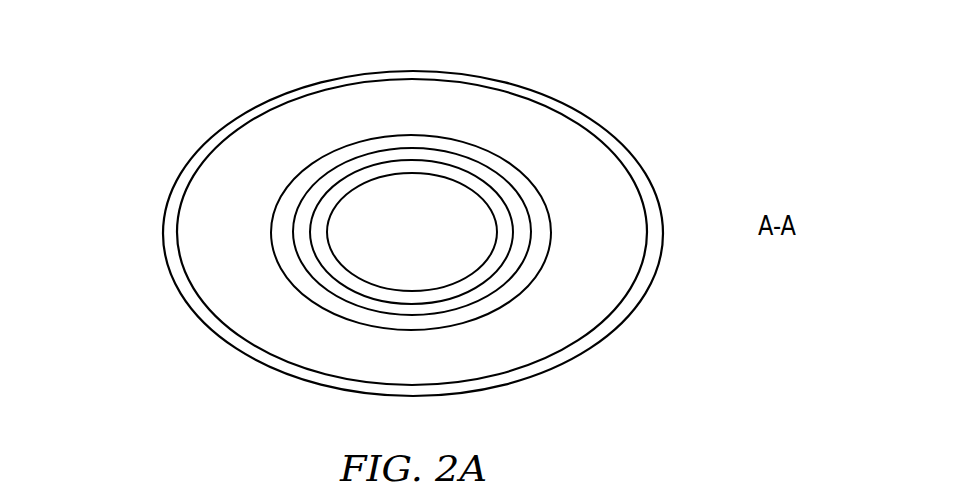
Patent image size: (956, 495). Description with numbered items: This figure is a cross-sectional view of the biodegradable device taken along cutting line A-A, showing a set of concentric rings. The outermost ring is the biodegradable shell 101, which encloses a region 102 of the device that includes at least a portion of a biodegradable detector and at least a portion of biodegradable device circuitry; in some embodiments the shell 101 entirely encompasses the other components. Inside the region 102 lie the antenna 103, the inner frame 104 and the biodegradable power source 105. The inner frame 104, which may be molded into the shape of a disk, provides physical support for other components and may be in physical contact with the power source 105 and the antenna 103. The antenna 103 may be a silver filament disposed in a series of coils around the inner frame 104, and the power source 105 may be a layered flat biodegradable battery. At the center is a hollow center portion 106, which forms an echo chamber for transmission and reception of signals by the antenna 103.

The biodegradable shell 101 is at (174, 197).
The region 102 is at (251, 151).
The antenna 103 is at (546, 227).
The inner frame 104 is at (511, 198).
The biodegradable power source 105 is at (478, 192).
The hollow center portion 106 is at (467, 245).